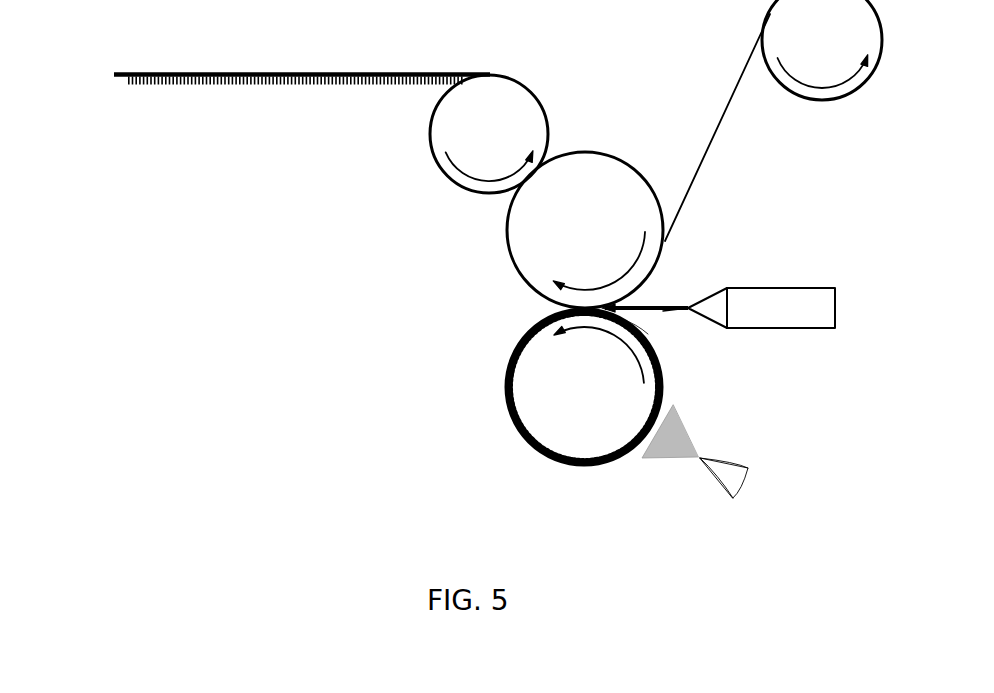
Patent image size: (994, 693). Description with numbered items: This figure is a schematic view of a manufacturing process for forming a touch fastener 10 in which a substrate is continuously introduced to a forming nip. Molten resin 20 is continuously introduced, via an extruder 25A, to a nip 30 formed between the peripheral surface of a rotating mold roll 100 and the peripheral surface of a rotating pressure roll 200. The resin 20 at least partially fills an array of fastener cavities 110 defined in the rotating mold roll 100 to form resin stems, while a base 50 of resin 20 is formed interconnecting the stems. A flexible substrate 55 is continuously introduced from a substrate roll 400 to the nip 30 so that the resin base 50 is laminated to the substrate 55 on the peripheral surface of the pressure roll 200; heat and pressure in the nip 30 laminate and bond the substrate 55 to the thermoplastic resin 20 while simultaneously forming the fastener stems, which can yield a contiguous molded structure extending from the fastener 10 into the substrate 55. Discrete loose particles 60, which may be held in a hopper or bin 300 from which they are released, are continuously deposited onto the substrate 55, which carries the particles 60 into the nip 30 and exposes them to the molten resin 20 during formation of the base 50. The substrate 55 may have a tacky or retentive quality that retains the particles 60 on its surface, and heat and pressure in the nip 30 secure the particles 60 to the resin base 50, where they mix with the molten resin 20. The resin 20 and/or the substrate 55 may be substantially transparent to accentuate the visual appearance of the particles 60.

The touch fastener 10 is at (92, 75).
The base 50 is at (397, 73).
The pressure roll 200 is at (600, 153).
The flexible substrate 55 is at (737, 86).
The substrate roll 400 is at (866, 80).
The molten resin 20 is at (667, 309).
The nip 30 is at (645, 326).
The extruder 25A is at (780, 328).
The mold roll 100 is at (520, 436).
The fastener cavities 110 is at (500, 362).
The loose particles 60 is at (672, 440).
The hopper or bin 300 is at (742, 476).